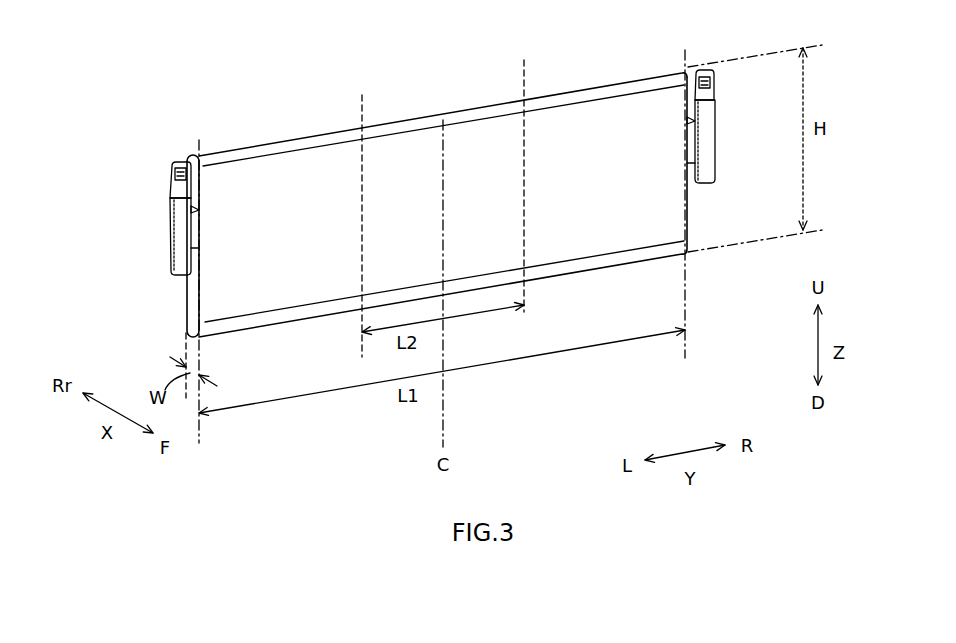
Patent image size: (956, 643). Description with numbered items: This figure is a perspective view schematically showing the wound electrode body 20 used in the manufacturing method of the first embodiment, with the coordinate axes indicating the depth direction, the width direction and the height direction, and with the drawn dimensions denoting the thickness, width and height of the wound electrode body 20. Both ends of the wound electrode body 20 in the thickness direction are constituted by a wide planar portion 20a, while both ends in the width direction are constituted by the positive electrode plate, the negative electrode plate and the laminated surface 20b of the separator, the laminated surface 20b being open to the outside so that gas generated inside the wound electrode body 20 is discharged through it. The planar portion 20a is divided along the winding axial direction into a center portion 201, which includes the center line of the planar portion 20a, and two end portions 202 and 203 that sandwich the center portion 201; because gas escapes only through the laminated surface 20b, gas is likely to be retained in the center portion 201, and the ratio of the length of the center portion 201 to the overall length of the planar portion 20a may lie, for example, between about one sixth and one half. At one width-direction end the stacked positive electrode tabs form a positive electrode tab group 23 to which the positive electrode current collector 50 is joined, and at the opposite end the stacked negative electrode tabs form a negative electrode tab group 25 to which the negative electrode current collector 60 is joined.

The wound electrode body 20 is at (398, 168).
The planar portion 20a is at (222, 176).
The laminated surface 20b is at (183, 287).
The positive electrode tab group 23 is at (198, 242).
The negative electrode tab group 25 is at (689, 166).
The positive electrode current collector 50 is at (168, 242).
The negative electrode current collector 60 is at (718, 137).
The center portion 201 is at (363, 99).
The end portion 202 is at (200, 135).
The end portion 203 is at (528, 70).